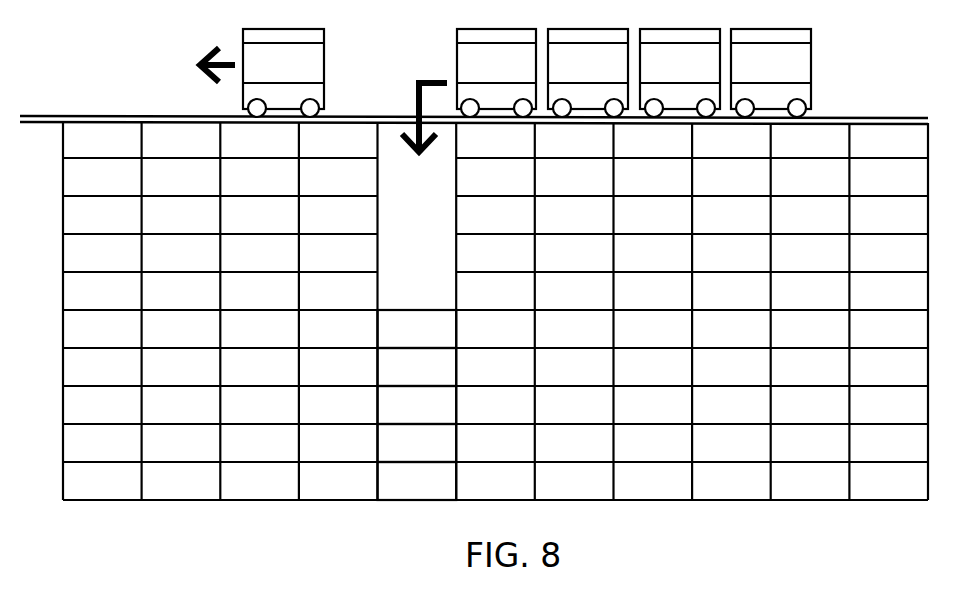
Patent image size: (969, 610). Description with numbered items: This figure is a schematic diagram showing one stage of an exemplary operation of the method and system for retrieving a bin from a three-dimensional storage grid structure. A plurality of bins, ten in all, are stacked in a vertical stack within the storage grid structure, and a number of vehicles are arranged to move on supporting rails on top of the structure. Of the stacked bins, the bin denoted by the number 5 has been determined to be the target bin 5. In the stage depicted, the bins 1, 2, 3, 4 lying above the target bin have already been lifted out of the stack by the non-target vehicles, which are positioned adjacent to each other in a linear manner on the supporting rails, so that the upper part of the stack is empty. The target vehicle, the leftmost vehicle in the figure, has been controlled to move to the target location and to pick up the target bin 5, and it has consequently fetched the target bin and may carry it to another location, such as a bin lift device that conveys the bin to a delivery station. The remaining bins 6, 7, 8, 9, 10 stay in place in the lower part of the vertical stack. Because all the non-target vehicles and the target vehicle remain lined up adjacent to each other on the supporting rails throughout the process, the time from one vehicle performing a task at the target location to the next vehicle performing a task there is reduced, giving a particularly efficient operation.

The bin 1 is at (771, 73).
The bin 2 is at (680, 73).
The bin 3 is at (588, 73).
The bin 4 is at (496, 73).
The target bin 5 is at (283, 73).
The bin 6 is at (417, 329).
The bin 7 is at (417, 367).
The bin 8 is at (417, 405).
The bin 9 is at (417, 443).
The bin 10 is at (417, 481).